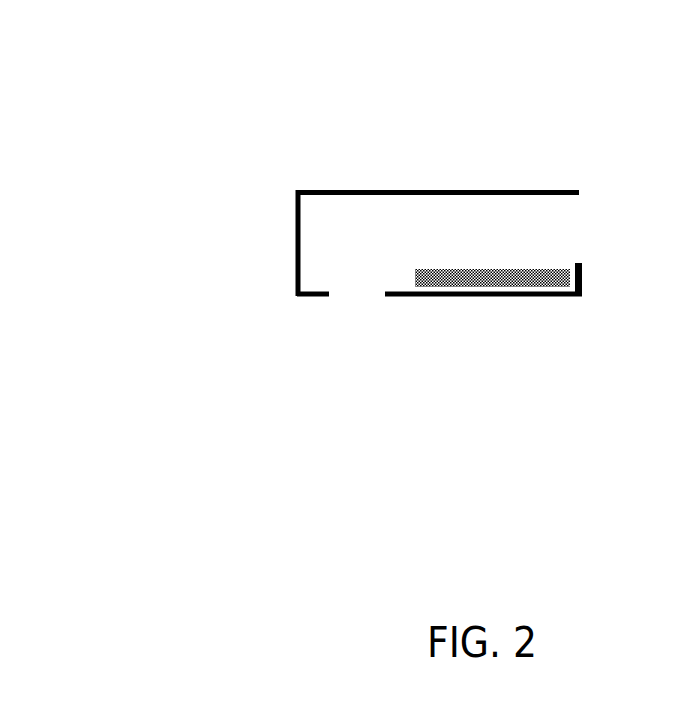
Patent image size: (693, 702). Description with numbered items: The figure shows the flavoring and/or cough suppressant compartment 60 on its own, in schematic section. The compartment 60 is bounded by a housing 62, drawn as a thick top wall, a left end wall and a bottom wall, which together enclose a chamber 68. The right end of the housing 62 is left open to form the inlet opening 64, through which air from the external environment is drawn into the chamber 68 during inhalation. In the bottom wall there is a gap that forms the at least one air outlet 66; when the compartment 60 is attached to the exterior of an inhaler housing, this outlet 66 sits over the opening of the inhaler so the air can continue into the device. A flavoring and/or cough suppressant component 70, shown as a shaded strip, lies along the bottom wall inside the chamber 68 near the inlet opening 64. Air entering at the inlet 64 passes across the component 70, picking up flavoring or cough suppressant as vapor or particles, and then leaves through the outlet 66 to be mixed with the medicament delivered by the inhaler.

The compartment 60 is at (256, 140).
The housing 62 is at (344, 188).
The inlet opening 64 is at (590, 207).
The air outlet 66 is at (353, 300).
The chamber 68 is at (430, 236).
The flavoring and/or cough suppressant component 70 is at (570, 278).